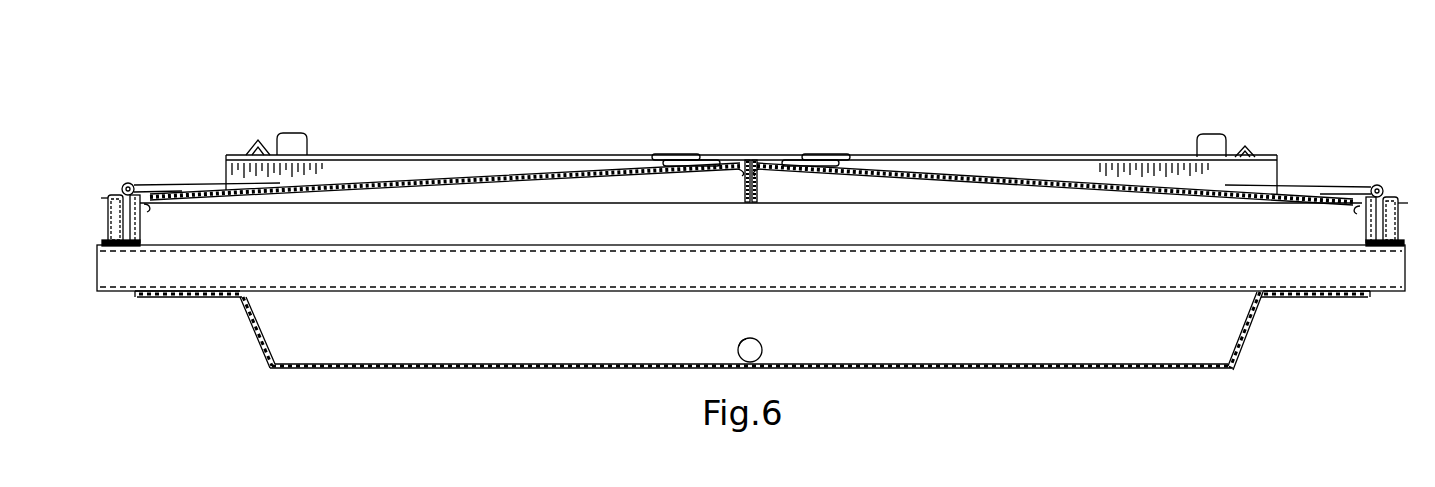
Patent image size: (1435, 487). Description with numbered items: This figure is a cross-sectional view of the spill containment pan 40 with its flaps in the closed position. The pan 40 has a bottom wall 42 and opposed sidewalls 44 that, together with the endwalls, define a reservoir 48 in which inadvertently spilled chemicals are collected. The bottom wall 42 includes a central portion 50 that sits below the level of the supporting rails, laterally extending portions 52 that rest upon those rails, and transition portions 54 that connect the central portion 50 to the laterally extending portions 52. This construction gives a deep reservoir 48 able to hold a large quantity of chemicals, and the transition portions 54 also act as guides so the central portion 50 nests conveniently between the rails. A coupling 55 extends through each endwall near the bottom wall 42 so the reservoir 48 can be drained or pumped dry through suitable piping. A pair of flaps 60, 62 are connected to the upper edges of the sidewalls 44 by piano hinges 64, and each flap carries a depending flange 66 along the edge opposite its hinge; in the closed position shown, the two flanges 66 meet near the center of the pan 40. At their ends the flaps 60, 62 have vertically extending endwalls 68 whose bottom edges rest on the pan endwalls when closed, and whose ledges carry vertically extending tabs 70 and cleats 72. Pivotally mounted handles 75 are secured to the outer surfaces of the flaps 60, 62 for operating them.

The spill containment pan 40 is at (922, 82).
The bottom wall 42 is at (916, 348).
The sidewalls 44 is at (140, 222).
The reservoir 48 is at (445, 332).
The central portion 50 is at (802, 366).
The laterally extending portions 52 is at (200, 298).
The transition portions 54 is at (258, 331).
The coupling 55 is at (745, 339).
The flap 60 is at (978, 131).
The flap 62 is at (478, 128).
The piano hinges 64 is at (131, 183).
The depending flanges 66 is at (745, 181).
The endwalls 68 is at (345, 176).
The tabs 70 is at (292, 133).
The cleats 72 is at (252, 144).
The handles 75 is at (675, 154).